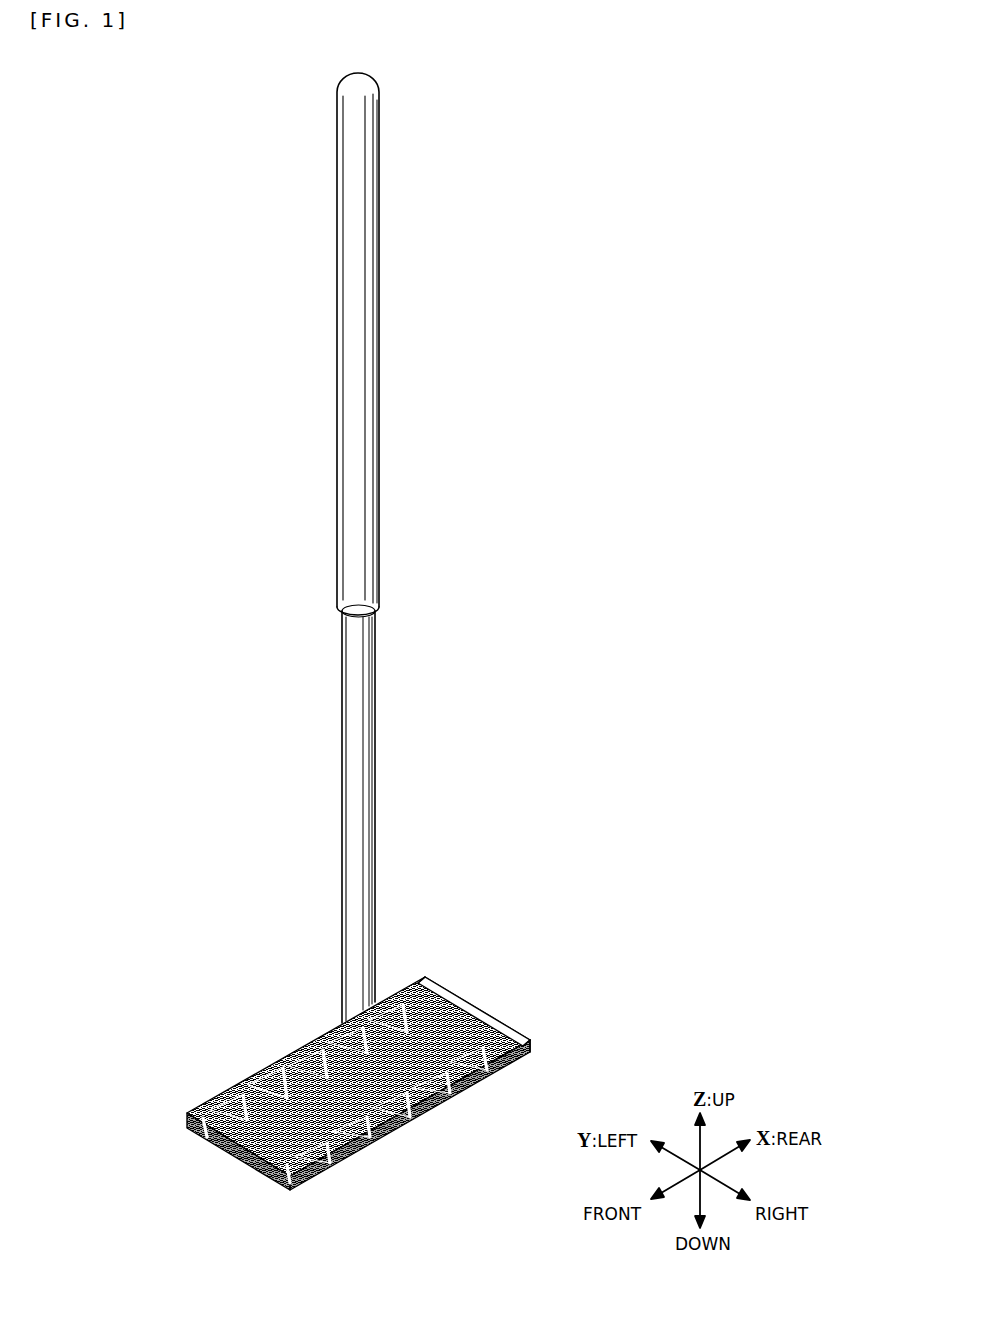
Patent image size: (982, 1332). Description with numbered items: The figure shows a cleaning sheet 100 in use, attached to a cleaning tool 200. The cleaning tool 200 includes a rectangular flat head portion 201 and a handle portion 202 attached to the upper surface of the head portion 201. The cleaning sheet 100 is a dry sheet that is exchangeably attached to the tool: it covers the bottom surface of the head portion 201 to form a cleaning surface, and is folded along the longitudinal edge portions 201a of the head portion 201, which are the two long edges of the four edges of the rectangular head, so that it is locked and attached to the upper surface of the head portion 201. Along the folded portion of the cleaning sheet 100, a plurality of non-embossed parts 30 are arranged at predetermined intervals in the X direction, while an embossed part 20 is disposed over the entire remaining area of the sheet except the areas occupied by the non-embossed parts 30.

The cleaning sheet 100 is at (363, 639).
The cleaning tool 200 is at (430, 548).
The handle portion 202 is at (367, 705).
The head portion 201 is at (483, 1013).
The longitudinal edge portions 201a is at (417, 980).
The embossed part 20 is at (363, 1063).
The non-embossed parts 30 is at (200, 1140).